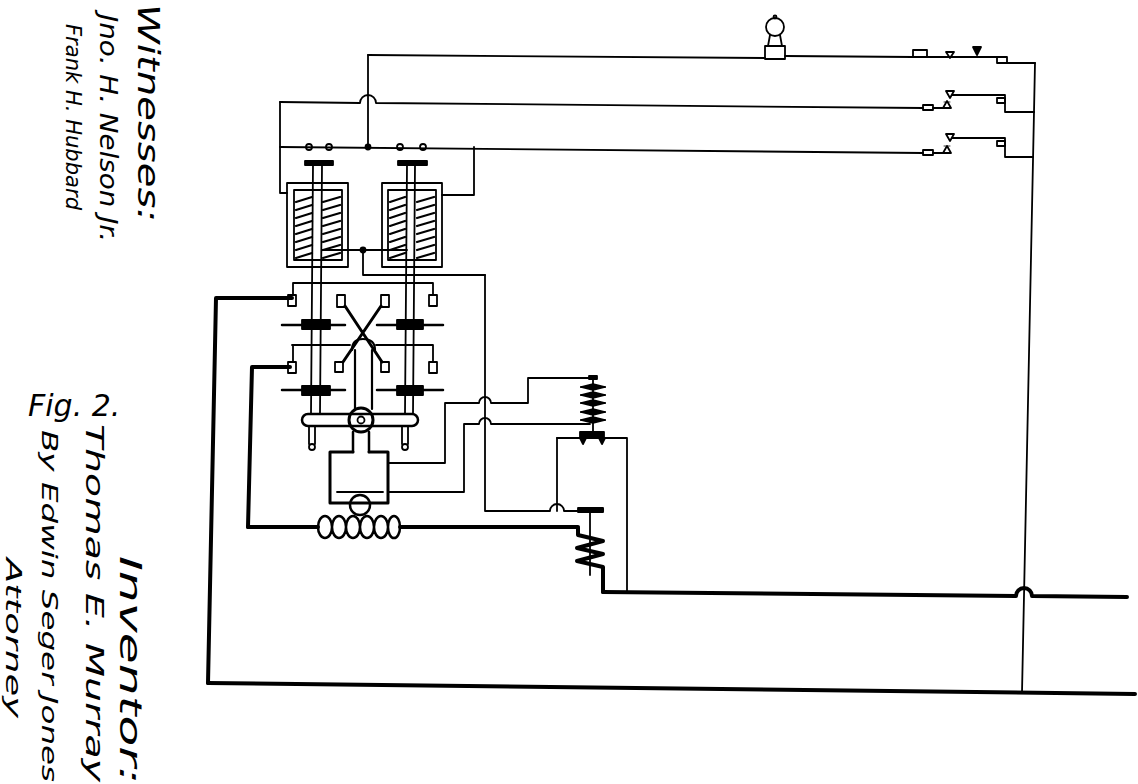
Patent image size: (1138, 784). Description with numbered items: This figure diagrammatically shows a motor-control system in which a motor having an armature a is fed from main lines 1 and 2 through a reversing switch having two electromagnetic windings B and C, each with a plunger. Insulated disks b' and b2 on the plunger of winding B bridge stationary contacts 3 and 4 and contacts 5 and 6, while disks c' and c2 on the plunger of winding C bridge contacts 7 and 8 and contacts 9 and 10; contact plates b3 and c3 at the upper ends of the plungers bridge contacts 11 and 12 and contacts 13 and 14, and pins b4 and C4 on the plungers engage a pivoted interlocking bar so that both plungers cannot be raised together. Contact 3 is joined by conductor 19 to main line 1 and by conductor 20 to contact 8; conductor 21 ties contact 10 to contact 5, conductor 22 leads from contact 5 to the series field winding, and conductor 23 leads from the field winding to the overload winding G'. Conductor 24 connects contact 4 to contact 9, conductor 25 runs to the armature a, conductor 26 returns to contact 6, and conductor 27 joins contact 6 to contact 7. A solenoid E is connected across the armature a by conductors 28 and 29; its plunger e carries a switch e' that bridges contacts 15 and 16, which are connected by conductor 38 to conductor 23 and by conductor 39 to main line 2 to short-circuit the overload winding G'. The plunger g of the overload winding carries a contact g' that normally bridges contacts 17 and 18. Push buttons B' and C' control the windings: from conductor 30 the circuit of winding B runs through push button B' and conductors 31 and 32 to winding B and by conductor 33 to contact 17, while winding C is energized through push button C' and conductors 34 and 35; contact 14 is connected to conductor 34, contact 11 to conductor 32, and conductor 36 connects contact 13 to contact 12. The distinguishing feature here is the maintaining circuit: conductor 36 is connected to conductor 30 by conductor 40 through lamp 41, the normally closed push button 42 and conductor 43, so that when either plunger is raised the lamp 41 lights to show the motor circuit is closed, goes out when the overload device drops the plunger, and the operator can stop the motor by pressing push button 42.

The main line 1 is at (815, 690).
The main line 2 is at (828, 588).
The stationary contact 3 is at (288, 302).
The stationary contact 4 is at (350, 300).
The stationary contact 5 is at (288, 370).
The stationary contact 6 is at (338, 373).
The stationary contact 7 is at (389, 302).
The stationary contact 8 is at (437, 301).
The stationary contact 9 is at (390, 373).
The stationary contact 10 is at (437, 370).
The stationary contact 11 is at (310, 144).
The stationary contact 12 is at (330, 144).
The stationary contact 13 is at (400, 144).
The stationary contact 14 is at (424, 144).
The contact 15 is at (582, 441).
The contact 16 is at (602, 442).
The stationary contact 17 is at (577, 514).
The stationary contact 18 is at (604, 508).
The conductor 19 is at (206, 450).
The conductor 20 is at (358, 282).
The conductor 21 is at (300, 329).
The conductor 22 is at (250, 450).
The conductor 23 is at (456, 531).
The conductor 24 is at (366, 308).
The conductor 25 is at (370, 430).
The conductor 26 is at (330, 480).
The conductor 27 is at (351, 347).
The conductor 28 is at (506, 405).
The conductor 29 is at (502, 426).
The conductor 30 is at (1028, 351).
The conductor 31 is at (704, 107).
The conductor 32 is at (280, 183).
The conductor 33 is at (486, 303).
The conductor 34 is at (705, 150).
The conductor 35 is at (475, 183).
The conductor 36 is at (368, 150).
The conductor 38 is at (542, 474).
The conductor 39 is at (628, 457).
The conductor 40 is at (597, 58).
The lamp 41 is at (786, 30).
The push button 42 is at (974, 45).
The conductor 43 is at (1036, 101).
The electromagnetic winding B is at (299, 225).
The electromagnetic winding C is at (425, 225).
The push button B' is at (963, 116).
The push button C' is at (959, 159).
The armature a is at (357, 479).
The switch disk b' is at (291, 336).
The switch disk c' is at (419, 328).
The switch disk b2 is at (284, 392).
The switch disk c2 is at (438, 392).
The contact plate b3 is at (306, 165).
The contact plate c3 is at (428, 166).
The pin b4 is at (306, 447).
The pin C4 is at (408, 448).
The solenoid E is at (607, 398).
The plunger e is at (601, 426).
The switch e' is at (587, 458).
The plunger g is at (606, 543).
The contact g' is at (590, 495).
The overload winding G' is at (578, 560).